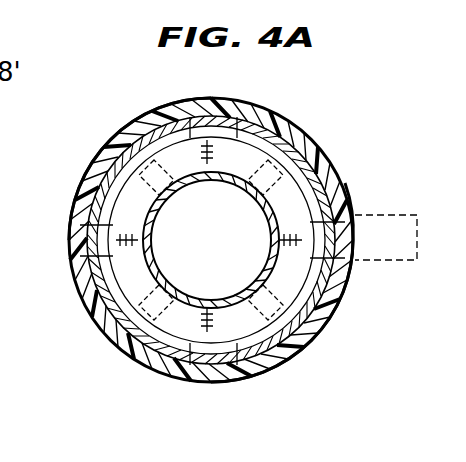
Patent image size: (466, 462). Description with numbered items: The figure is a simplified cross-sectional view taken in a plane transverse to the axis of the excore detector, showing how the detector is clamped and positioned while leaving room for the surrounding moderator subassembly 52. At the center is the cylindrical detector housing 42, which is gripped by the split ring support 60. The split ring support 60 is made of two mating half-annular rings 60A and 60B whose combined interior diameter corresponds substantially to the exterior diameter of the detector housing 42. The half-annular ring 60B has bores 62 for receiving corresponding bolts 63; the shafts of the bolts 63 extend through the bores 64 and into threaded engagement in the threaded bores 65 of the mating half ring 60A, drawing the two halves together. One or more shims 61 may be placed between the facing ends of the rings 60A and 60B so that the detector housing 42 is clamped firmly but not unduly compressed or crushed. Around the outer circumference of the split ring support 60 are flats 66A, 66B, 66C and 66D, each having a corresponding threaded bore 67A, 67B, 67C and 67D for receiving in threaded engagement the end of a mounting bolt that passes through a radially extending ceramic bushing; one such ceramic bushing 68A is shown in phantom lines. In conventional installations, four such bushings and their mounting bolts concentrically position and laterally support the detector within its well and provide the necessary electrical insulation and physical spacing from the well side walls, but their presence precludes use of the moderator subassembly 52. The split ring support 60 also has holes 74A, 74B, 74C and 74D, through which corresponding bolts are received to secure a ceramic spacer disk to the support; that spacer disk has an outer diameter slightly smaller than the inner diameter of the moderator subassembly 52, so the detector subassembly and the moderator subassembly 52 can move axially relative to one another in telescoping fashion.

The detector housing 42 is at (214, 245).
The moderator subassembly 52 is at (345, 183).
The split ring support 60 is at (292, 133).
The half-annular ring 60A is at (289, 311).
The half-annular ring 60B is at (140, 121).
The shim 61 is at (332, 171).
The bore 62 is at (116, 341).
The bolt 63 is at (95, 327).
The bore 64 is at (258, 232).
The threaded bore 65 is at (145, 240).
The flat 66A is at (350, 233).
The flat 66B is at (203, 97).
The flat 66C is at (80, 192).
The flat 66D is at (183, 383).
The threaded bore 67A is at (340, 205).
The threaded bore 67B is at (228, 101).
The threaded bore 67C is at (110, 237).
The threaded bore 67D is at (230, 385).
The ceramic bushing 68A is at (408, 260).
The hole 74A is at (343, 298).
The hole 74B is at (250, 110).
The hole 74C is at (112, 241).
The hole 74D is at (267, 380).